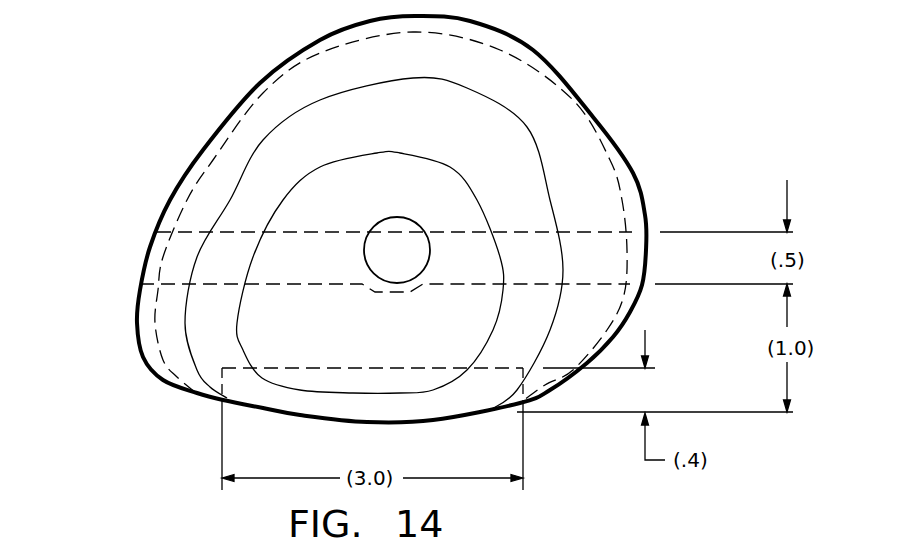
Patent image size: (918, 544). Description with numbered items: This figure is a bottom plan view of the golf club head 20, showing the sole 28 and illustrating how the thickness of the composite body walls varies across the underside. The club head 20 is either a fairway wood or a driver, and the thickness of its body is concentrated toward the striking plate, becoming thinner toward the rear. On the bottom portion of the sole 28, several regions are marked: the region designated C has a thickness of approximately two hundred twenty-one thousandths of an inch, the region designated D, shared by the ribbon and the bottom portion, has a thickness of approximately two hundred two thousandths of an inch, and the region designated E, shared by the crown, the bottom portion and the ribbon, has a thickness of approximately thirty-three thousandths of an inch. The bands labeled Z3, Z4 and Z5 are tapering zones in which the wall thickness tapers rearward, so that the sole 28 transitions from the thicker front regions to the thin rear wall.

The golf club head 20 is at (657, 110).
The sole 28 is at (465, 125).
The tapering zone Z3 is at (150, 243).
The tapering zone Z4 is at (140, 290).
The tapering zone Z5 is at (140, 353).
The region C is at (462, 394).
The region D is at (378, 345).
The region E is at (381, 203).